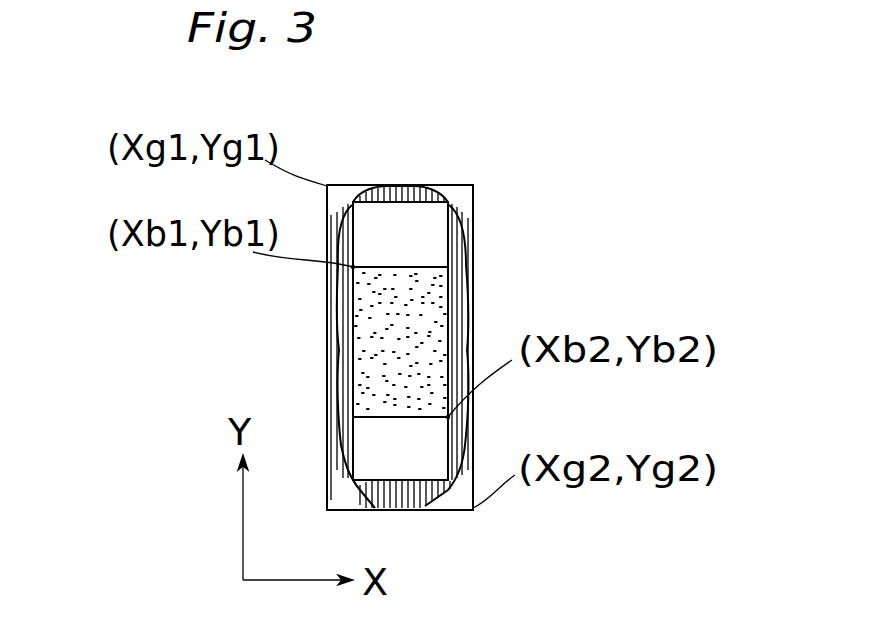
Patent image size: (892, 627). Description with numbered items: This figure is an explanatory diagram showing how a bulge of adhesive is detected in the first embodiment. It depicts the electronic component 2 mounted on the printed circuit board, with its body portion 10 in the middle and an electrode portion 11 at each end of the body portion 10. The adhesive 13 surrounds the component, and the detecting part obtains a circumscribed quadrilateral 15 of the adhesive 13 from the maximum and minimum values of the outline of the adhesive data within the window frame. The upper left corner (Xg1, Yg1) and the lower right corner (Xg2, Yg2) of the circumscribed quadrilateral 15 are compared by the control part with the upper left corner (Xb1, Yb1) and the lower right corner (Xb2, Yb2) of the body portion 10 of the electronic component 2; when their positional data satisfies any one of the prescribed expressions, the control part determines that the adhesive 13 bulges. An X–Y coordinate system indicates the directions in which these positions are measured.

The electronic component 2 is at (332, 322).
The body portion 10 is at (420, 315).
The electrode portion 11 is at (370, 233).
The adhesive 13 is at (473, 260).
The circumscribed quadrilateral 15 is at (458, 184).